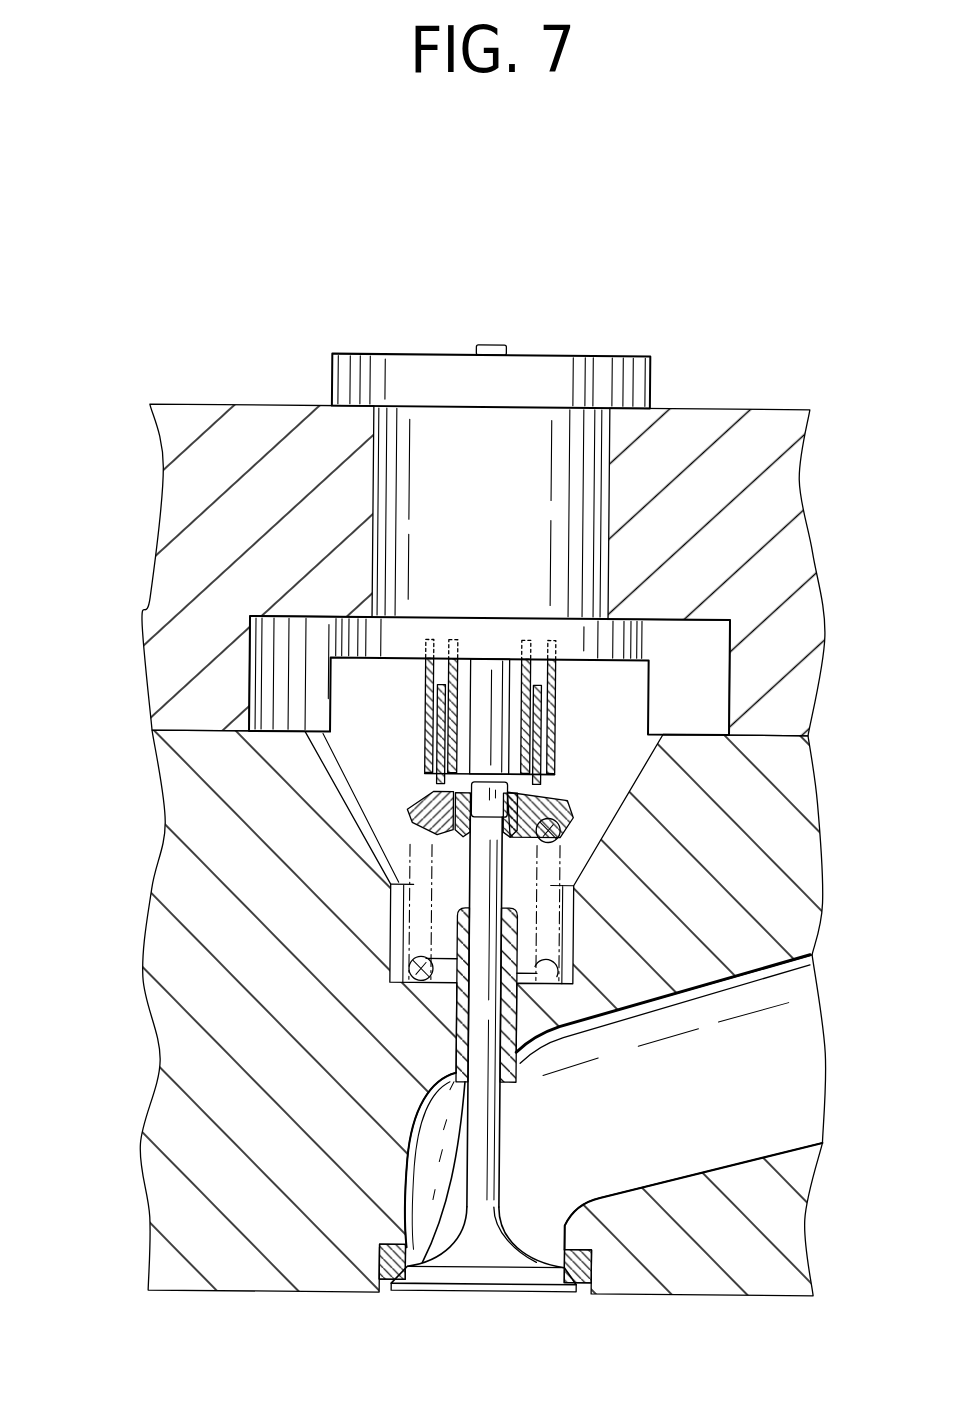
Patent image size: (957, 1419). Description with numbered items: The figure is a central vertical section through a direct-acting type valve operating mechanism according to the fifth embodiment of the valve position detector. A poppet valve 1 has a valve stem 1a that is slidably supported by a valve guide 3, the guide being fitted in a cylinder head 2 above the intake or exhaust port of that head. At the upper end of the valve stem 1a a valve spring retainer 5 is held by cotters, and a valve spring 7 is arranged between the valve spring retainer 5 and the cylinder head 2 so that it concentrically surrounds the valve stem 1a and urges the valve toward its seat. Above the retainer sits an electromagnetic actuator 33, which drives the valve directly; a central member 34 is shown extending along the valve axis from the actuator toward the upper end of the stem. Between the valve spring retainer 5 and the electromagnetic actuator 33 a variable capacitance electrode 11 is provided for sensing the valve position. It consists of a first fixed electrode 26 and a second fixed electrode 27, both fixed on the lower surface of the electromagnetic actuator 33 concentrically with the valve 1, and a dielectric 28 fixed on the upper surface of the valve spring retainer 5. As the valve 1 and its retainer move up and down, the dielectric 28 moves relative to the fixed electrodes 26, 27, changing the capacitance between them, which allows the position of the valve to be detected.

The poppet valve 1 is at (521, 1150).
The valve stem 1a is at (505, 1098).
The cylinder head 2 is at (280, 1294).
The valve guide 3 is at (521, 1052).
The valve spring retainer 5 is at (421, 803).
The valve spring 7 is at (418, 823).
The variable capacitance electrode 11 is at (399, 719).
The first fixed electrode 26 is at (424, 690).
The second fixed electrode 27 is at (548, 668).
The dielectric 28 is at (541, 716).
The electromagnetic actuator 33 is at (616, 346).
The push rod 34 is at (483, 344).